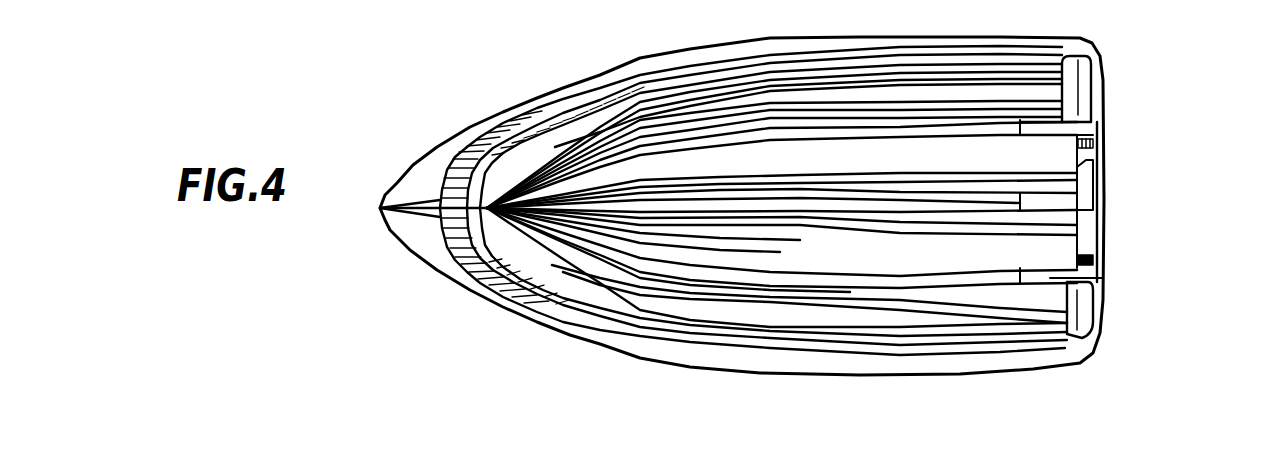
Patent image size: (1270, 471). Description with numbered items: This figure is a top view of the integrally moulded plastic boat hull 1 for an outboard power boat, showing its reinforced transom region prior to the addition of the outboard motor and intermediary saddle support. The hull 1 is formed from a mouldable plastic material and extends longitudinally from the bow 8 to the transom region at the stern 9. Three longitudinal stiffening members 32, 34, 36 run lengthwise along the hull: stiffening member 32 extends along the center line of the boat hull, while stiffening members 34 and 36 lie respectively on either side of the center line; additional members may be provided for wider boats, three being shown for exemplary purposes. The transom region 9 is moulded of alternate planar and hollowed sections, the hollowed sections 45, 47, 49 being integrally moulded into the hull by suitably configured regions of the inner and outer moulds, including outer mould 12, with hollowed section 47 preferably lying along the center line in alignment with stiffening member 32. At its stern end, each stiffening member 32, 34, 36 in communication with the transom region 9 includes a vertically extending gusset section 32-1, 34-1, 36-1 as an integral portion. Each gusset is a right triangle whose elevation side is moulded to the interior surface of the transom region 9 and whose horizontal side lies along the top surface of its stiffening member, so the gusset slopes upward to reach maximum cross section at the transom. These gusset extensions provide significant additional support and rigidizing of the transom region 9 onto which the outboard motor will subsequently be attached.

The boat hull 1 is at (473, 108).
The bow 8 is at (380, 238).
The transom region at the stern 9 is at (1105, 254).
The outer mould 12 is at (563, 338).
The longitudinal stiffening member 32 is at (845, 200).
The gusset section 32-1 is at (1043, 203).
The longitudinal stiffening member 34 is at (858, 125).
The gusset section 34-1 is at (1093, 125).
The longitudinal stiffening member 36 is at (913, 280).
The gusset section 36-1 is at (1093, 281).
The hollowed section 45 is at (1077, 144).
The hollowed section 47 is at (1093, 200).
The hollowed section 49 is at (1103, 276).